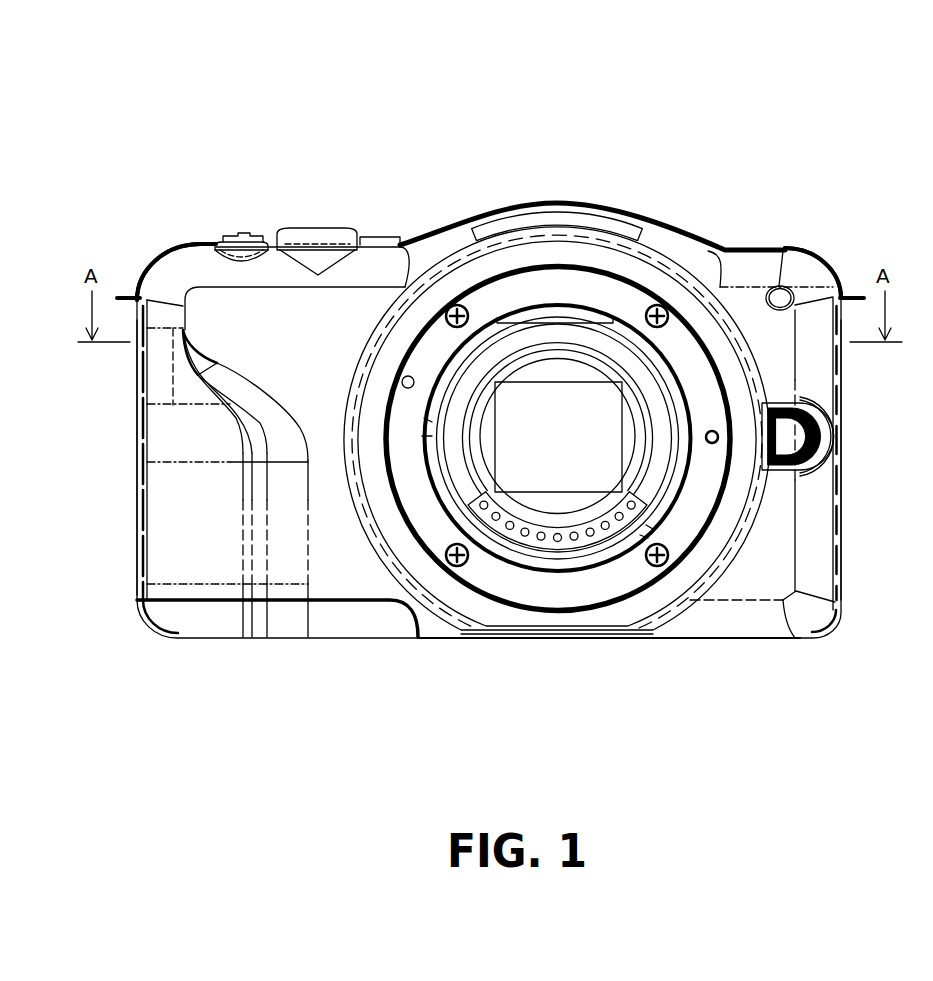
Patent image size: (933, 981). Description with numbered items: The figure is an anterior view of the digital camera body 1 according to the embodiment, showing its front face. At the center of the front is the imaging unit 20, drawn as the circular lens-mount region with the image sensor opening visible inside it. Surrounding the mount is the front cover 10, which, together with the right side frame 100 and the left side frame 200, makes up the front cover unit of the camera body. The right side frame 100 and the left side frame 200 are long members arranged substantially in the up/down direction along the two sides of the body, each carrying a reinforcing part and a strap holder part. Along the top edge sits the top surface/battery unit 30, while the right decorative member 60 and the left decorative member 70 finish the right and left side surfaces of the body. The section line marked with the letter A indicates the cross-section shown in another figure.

The digital camera body 1 is at (817, 78).
The front cover 10 is at (352, 583).
The imaging unit 20 is at (555, 484).
The top surface/battery unit 30 is at (203, 246).
The right decorative member 60 is at (843, 426).
The left decorative member 70 is at (137, 440).
The right side frame 100 is at (853, 300).
The left side frame 200 is at (136, 300).